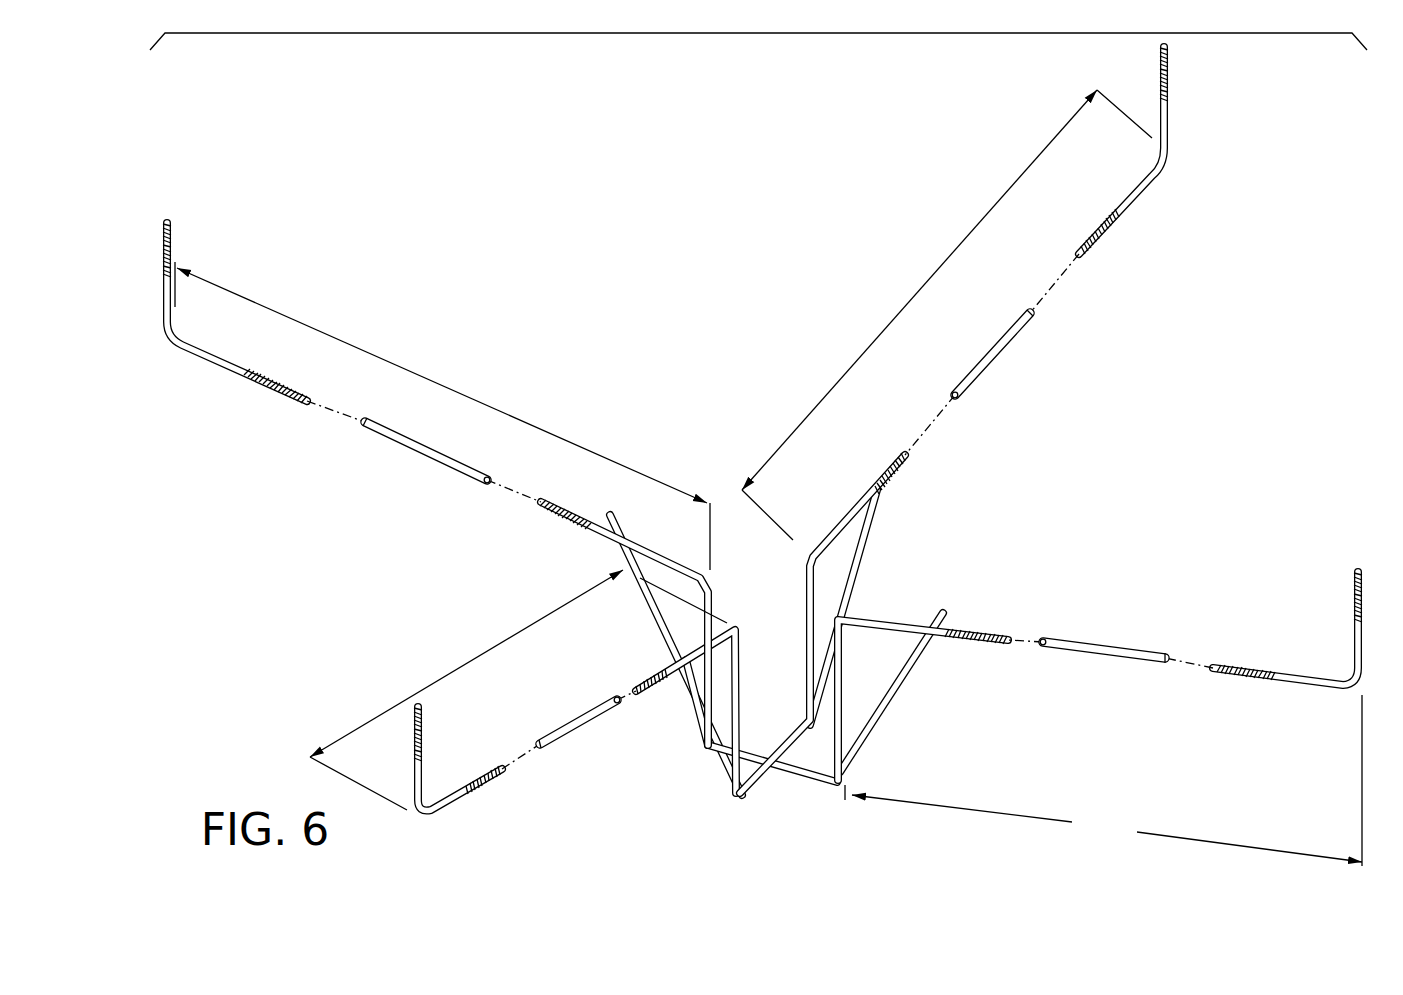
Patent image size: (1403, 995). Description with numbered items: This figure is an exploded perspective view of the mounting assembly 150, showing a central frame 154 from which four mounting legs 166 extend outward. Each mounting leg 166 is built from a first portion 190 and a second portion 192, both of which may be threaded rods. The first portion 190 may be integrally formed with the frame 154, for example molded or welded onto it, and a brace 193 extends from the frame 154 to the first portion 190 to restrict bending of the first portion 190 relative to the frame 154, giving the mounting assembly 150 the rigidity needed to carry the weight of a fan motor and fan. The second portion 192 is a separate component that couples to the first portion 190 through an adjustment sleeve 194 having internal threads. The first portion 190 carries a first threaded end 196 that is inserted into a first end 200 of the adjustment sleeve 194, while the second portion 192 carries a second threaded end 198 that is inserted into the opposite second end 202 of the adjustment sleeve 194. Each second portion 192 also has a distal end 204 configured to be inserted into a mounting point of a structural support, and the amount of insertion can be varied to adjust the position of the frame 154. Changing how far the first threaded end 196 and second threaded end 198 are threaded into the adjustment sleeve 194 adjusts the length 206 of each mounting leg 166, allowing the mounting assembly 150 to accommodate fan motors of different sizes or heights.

The mounting assembly 150 is at (1315, 270).
The frame 154 is at (780, 785).
The mounting leg 166 is at (742, 452).
The first portion 190 is at (650, 549).
The second portion 192 is at (165, 348).
The brace 193 is at (662, 614).
The adjustment sleeve 194 is at (400, 448).
The first threaded end 196 is at (557, 516).
The second threaded end 198 is at (268, 386).
The first end 200 is at (485, 480).
The second end 202 is at (364, 420).
The distal end 204 is at (170, 237).
The length 206 is at (768, 478).